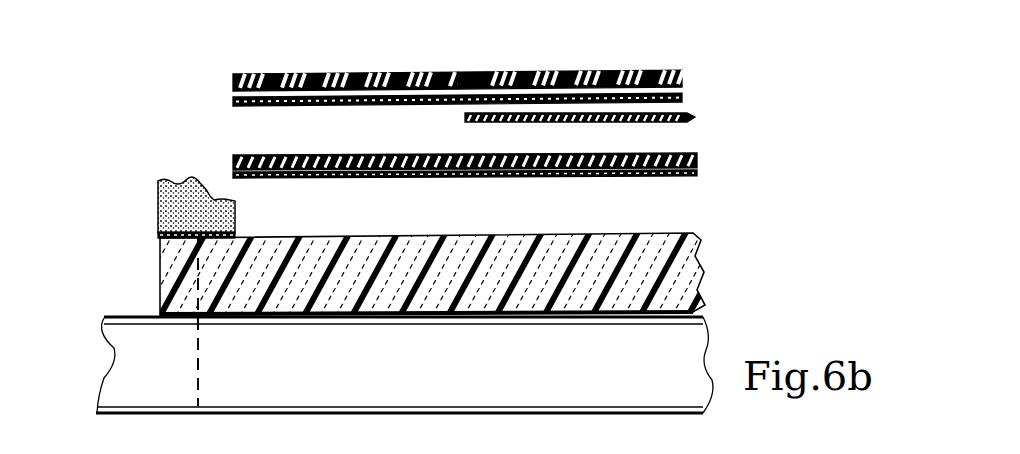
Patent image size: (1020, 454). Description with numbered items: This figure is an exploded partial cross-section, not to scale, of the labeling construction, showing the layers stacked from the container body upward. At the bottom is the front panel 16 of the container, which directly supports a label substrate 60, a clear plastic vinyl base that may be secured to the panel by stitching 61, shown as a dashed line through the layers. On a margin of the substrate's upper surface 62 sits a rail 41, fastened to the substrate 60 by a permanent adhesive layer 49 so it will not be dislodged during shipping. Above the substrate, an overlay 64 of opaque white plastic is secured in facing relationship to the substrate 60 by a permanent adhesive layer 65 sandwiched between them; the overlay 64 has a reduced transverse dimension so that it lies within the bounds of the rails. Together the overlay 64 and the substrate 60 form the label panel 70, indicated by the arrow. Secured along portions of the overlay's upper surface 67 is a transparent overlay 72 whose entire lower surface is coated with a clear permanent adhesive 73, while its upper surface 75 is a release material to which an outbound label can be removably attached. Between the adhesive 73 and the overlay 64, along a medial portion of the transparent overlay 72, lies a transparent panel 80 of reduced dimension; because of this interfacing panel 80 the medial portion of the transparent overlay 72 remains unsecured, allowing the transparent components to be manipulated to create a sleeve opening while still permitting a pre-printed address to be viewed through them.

The front panel 16 is at (140, 342).
The rail 41 is at (158, 196).
The permanent adhesive layer 49 is at (158, 235).
The label substrate 60 is at (525, 318).
The stitching 61 is at (200, 366).
The upper surface 62 is at (462, 234).
The overlay 64 is at (676, 153).
The permanent adhesive layer 65 is at (578, 179).
The upper surface 67 is at (265, 157).
The label panel 70 is at (690, 196).
The transparent overlay 72 is at (300, 73).
The clear permanent adhesive 73 is at (245, 107).
The upper surface 75 is at (578, 72).
The transparent panel 80 is at (465, 117).